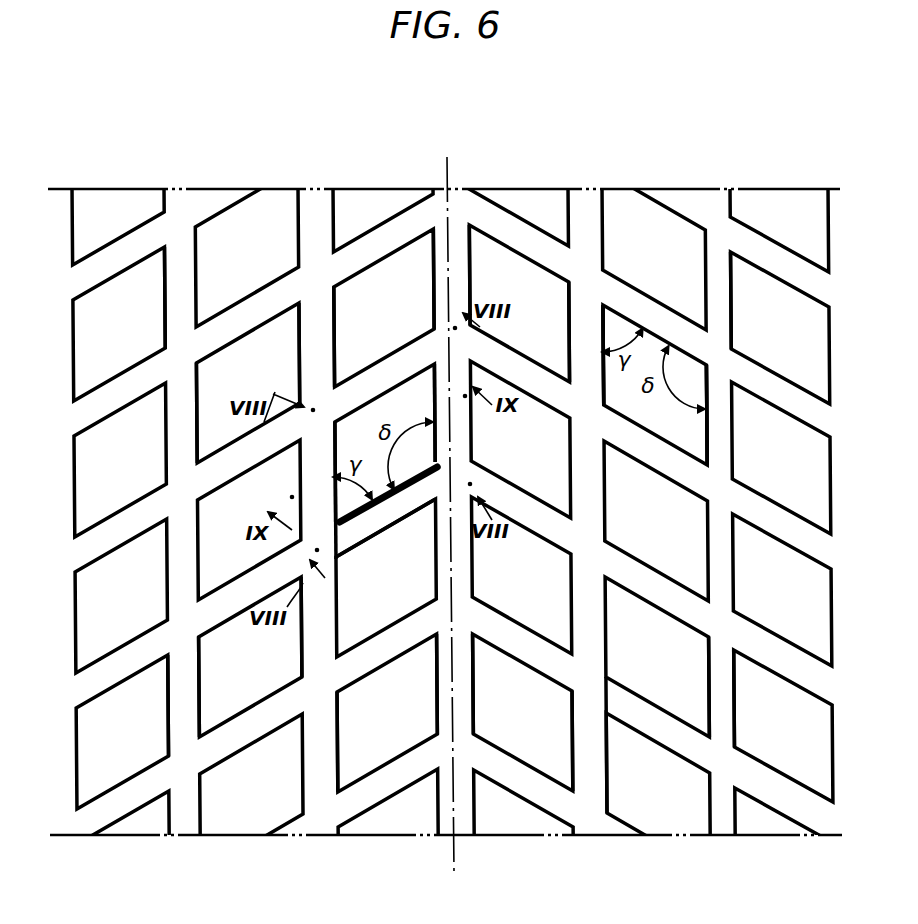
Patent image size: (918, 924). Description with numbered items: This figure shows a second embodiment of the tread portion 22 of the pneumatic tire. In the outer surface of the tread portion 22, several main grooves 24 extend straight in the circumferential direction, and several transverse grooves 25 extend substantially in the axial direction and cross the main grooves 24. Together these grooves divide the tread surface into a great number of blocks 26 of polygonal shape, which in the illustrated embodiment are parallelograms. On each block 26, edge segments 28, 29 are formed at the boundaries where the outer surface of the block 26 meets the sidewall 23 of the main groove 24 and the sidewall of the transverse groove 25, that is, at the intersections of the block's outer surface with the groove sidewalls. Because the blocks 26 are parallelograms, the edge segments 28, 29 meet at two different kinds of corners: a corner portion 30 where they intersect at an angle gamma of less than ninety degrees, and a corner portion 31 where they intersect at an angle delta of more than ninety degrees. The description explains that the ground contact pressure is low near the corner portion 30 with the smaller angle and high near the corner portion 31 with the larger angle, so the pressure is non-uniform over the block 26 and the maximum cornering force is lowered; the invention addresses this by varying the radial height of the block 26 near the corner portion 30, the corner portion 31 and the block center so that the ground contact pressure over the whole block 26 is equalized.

The tread portion 22 is at (632, 187).
The sidewall of the main groove 23 is at (600, 378).
The main groove 24 is at (175, 195).
The transverse groove 25 is at (104, 262).
The block 26 is at (264, 215).
The edge segment 28 is at (334, 466).
The edge segment 29 is at (355, 395).
The corner portion 30 is at (427, 335).
The corner portion 31 is at (334, 420).